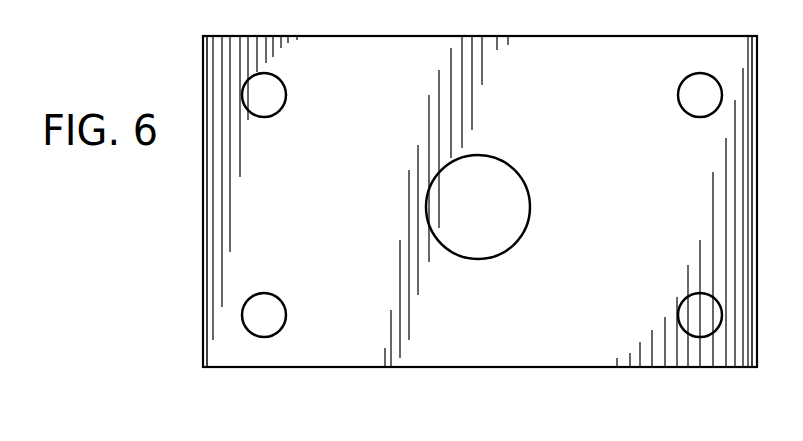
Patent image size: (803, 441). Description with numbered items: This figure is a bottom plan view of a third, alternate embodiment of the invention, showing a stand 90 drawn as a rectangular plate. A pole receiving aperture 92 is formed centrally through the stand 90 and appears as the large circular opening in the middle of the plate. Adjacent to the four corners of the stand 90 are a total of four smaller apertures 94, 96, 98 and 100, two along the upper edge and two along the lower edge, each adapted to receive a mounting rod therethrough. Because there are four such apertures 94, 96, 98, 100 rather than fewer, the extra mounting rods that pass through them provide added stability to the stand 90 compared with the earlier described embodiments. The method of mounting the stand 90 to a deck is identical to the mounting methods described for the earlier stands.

The stand 90 is at (600, 76).
The pole receiving aperture 92 is at (477, 200).
The aperture 94 is at (266, 100).
The aperture 96 is at (262, 315).
The aperture 98 is at (699, 99).
The aperture 100 is at (699, 316).